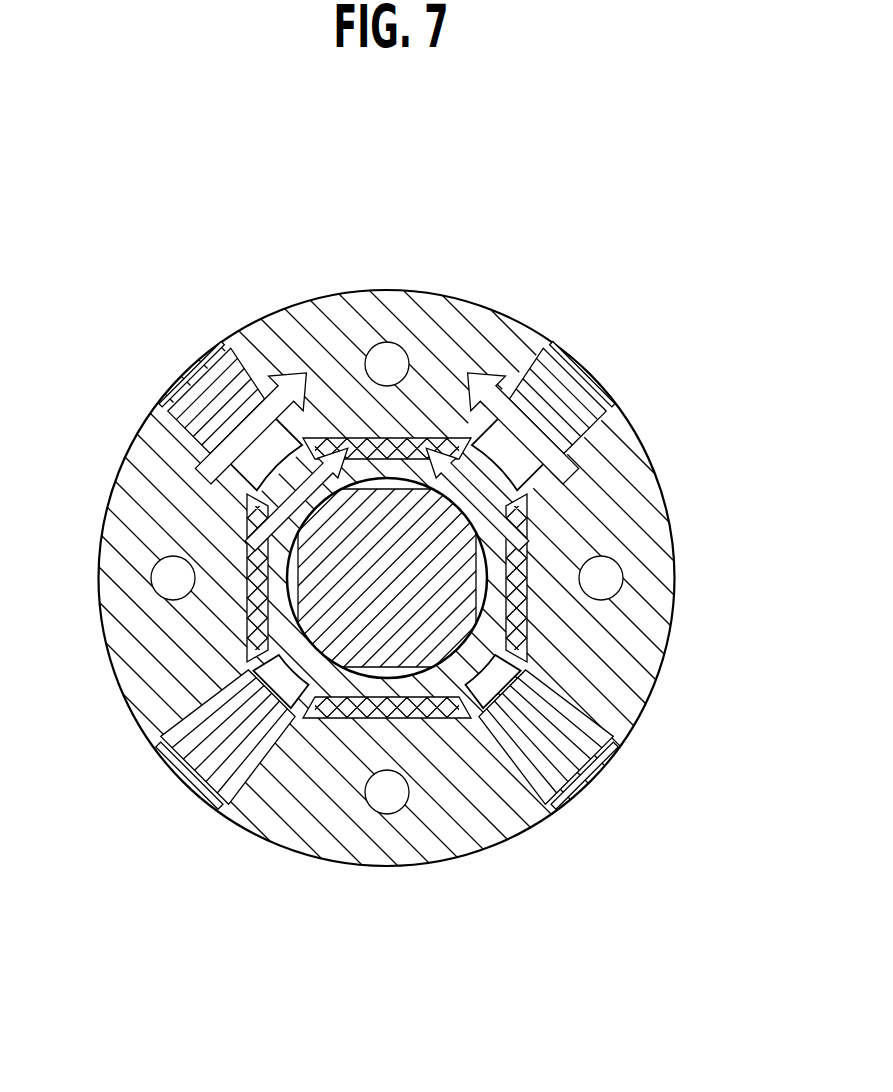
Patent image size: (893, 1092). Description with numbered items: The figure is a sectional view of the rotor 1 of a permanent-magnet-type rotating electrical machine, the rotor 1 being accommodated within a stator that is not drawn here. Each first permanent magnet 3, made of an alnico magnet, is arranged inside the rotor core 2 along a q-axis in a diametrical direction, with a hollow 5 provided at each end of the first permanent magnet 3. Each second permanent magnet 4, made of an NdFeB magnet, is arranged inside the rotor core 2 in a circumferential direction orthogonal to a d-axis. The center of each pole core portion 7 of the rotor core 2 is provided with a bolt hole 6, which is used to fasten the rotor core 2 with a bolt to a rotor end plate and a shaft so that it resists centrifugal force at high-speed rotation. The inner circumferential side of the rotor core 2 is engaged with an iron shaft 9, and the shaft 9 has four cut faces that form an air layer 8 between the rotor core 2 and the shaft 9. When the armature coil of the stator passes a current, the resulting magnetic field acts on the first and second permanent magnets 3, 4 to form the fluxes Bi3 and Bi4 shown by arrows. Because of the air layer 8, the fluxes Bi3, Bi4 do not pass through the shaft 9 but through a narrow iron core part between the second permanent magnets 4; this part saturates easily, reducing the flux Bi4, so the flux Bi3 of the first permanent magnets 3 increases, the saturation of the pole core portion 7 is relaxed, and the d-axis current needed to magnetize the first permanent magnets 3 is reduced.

The rotor 1 is at (317, 292).
The rotor core 2 is at (140, 665).
The first permanent magnet 3 is at (172, 396).
The second permanent magnet 4 is at (433, 438).
The hollow 5 is at (583, 367).
The bolt hole 6 is at (150, 570).
The pole core portion 7 is at (365, 303).
The air layer 8 is at (408, 670).
The shaft 9 is at (365, 665).
The flux Bi3 is at (287, 377).
The flux Bi4 is at (243, 508).